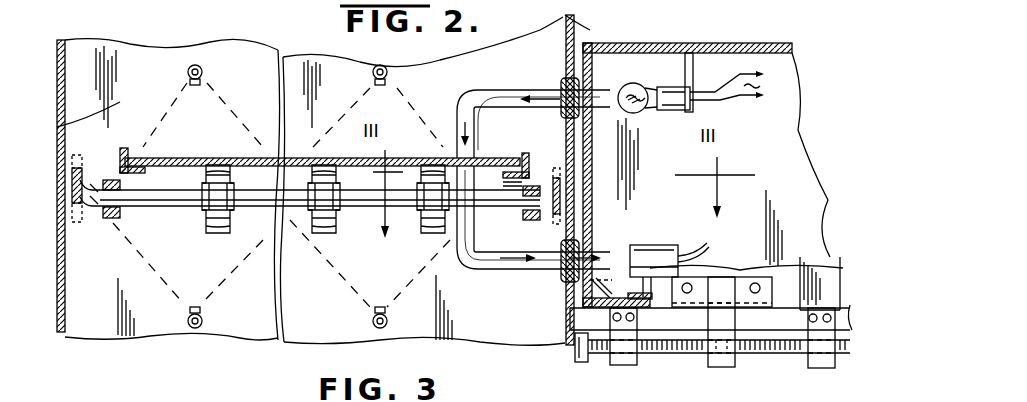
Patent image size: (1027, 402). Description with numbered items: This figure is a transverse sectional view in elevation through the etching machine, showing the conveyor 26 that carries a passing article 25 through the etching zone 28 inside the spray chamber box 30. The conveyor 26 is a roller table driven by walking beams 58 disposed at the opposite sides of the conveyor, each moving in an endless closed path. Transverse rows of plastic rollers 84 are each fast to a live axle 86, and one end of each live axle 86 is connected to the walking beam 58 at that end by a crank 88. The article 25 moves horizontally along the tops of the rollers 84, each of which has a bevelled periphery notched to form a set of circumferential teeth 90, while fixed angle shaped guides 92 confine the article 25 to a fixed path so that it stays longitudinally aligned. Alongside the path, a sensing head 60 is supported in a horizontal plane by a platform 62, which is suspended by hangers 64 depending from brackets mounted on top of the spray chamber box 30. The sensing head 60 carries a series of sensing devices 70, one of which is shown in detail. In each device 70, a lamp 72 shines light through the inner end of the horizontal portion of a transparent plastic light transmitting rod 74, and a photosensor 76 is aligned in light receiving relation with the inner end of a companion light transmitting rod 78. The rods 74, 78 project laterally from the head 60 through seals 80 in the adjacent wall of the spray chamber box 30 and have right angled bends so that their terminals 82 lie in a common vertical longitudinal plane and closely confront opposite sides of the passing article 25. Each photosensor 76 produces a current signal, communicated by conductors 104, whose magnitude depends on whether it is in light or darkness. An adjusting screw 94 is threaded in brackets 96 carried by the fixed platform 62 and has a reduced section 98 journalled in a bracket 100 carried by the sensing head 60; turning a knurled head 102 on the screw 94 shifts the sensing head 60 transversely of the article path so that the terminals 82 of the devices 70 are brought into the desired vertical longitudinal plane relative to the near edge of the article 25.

In FIG. 2, the article 25 is at (176, 150).
In FIG. 2, the conveyor 26 is at (168, 207).
In FIG. 2, the etching zone 28 is at (60, 124).
In FIG. 2, the spray chamber box 30 is at (57, 294).
In FIG. 3, the spray chamber box 30 is at (165, 401).
In FIG. 2, the walking beams 58 is at (553, 178).
In FIG. 2, the sensing head 60 is at (747, 45).
In FIG. 3, the sensing head 60 is at (208, 401).
In FIG. 2, the platform 62 is at (575, 318).
In FIG. 2, the hangers 64 is at (595, 33).
In FIG. 2, the sensing device 70 is at (620, 73).
In FIG. 2, the lamp 72 is at (643, 110).
In FIG. 2, the light transmitting rod 74 is at (518, 91).
In FIG. 2, the photosensor 76 is at (645, 257).
In FIG. 2, the companion light transmitting rod 78 is at (478, 265).
In FIG. 2, the seals 80 is at (558, 277).
In FIG. 2, the terminals 82 is at (455, 153).
In FIG. 3, the terminals 82 is at (128, 401).
In FIG. 2, the rollers 84 is at (211, 233).
In FIG. 2, the live axle 86 is at (142, 190).
In FIG. 2, the crank 88 is at (82, 190).
In FIG. 2, the circumferential teeth 90 is at (241, 160).
In FIG. 2, the angle shaped guides 92 is at (130, 150).
In FIG. 2, the adjusting screw 94 is at (674, 355).
In FIG. 2, the brackets 96 is at (625, 362).
In FIG. 2, the reduced section 98 is at (720, 360).
In FIG. 2, the bracket 100 is at (730, 325).
In FIG. 2, the knurled head 102 is at (575, 357).
In FIG. 2, the conductors 104 is at (693, 252).